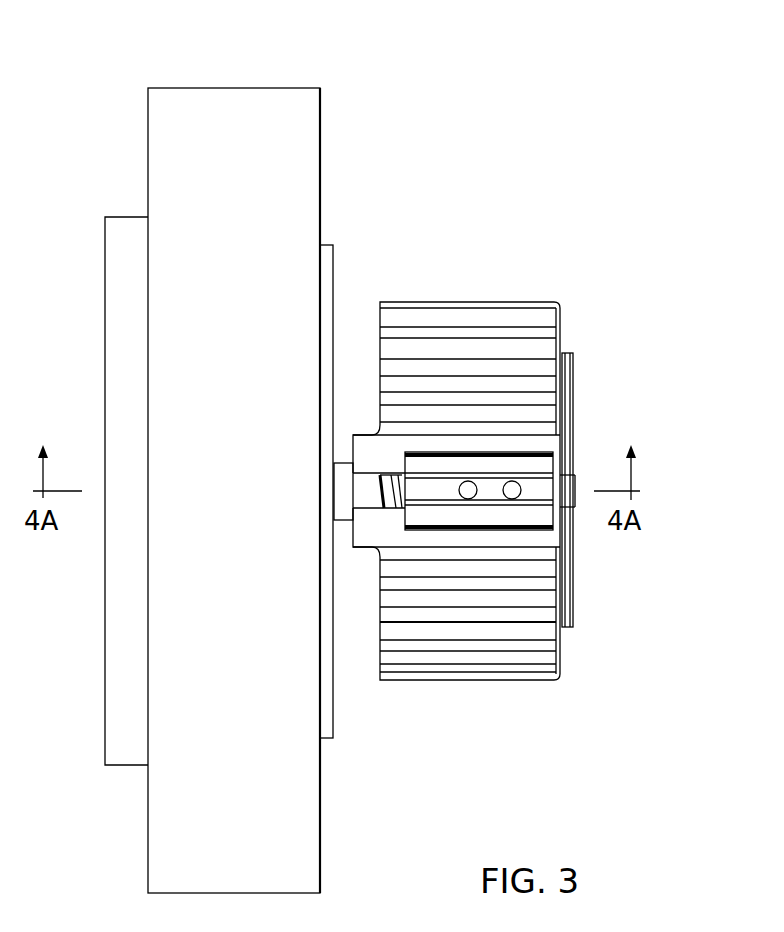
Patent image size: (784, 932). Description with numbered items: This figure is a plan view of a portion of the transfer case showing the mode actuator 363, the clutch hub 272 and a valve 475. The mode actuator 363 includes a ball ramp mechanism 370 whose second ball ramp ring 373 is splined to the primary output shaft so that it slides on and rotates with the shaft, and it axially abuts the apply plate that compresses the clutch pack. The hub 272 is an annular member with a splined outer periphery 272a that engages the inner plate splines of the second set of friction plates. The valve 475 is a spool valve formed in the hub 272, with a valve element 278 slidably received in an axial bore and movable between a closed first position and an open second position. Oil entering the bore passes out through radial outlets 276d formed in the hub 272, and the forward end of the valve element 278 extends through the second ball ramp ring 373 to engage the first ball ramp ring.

The mode actuator 363 is at (258, 70).
The ball ramp mechanism 370 is at (370, 230).
The hub 272 is at (540, 275).
The splined outer periphery 272a is at (560, 318).
The valve element 278 is at (372, 488).
The valve 475 is at (348, 528).
The outlets 276d is at (470, 492).
The second ball ramp ring 373 is at (333, 717).